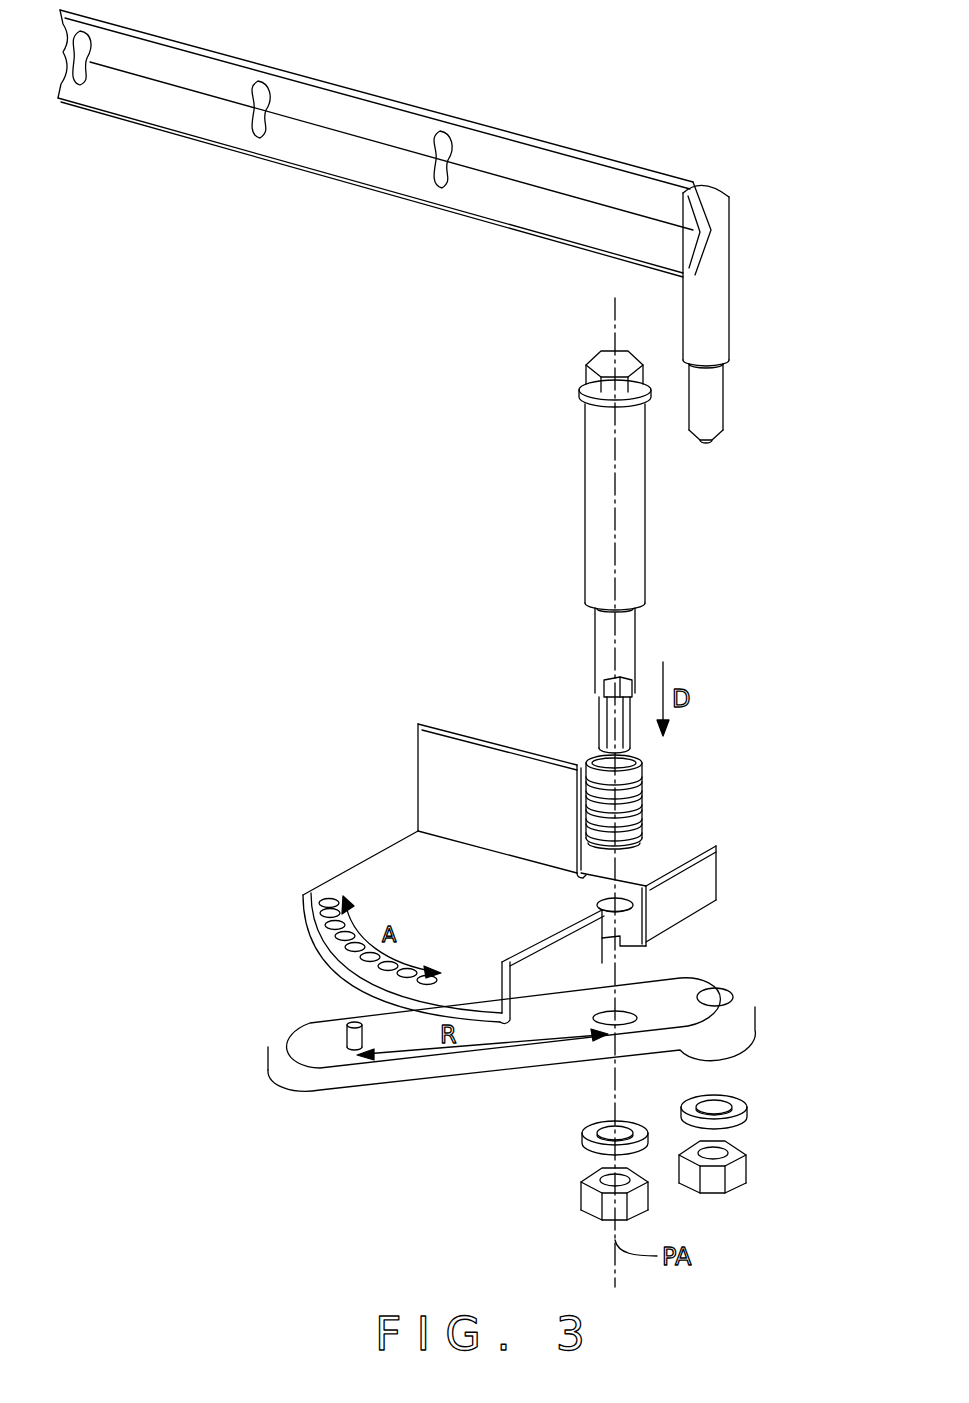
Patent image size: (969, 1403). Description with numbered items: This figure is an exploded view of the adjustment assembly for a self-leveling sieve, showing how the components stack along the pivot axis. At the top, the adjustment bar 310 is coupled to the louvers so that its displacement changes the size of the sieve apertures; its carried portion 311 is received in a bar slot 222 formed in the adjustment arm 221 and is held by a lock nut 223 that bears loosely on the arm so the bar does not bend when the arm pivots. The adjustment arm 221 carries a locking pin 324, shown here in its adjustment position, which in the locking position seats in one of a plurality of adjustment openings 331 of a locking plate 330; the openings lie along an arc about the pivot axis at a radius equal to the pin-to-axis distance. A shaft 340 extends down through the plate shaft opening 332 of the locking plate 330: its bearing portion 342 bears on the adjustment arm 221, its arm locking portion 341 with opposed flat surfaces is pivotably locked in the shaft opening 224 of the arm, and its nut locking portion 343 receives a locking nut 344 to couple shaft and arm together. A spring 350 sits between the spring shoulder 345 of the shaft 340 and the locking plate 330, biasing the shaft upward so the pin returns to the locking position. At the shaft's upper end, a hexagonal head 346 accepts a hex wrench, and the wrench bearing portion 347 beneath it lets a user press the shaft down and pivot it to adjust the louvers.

The adjustment bar 310 is at (733, 228).
The carried portion 311 is at (716, 403).
The head 346 is at (590, 369).
The wrench bearing portion 347 is at (580, 394).
The shaft 340 is at (651, 576).
The spring shoulder 345 is at (600, 610).
The bearing portion 342 is at (637, 641).
The arm locking portion 341 is at (597, 697).
The nut locking portion 343 is at (632, 744).
The spring 350 is at (643, 808).
The locking plate 330 is at (462, 895).
The plate shaft opening 332 is at (598, 903).
The adjustment openings 331 is at (350, 944).
The locking pin 324 is at (350, 1027).
The adjustment arm 221 is at (680, 988).
The bar slot 222 is at (726, 996).
The shaft opening 224 is at (640, 1022).
The lock nut 223 is at (742, 1170).
The locking nut 344 is at (590, 1204).